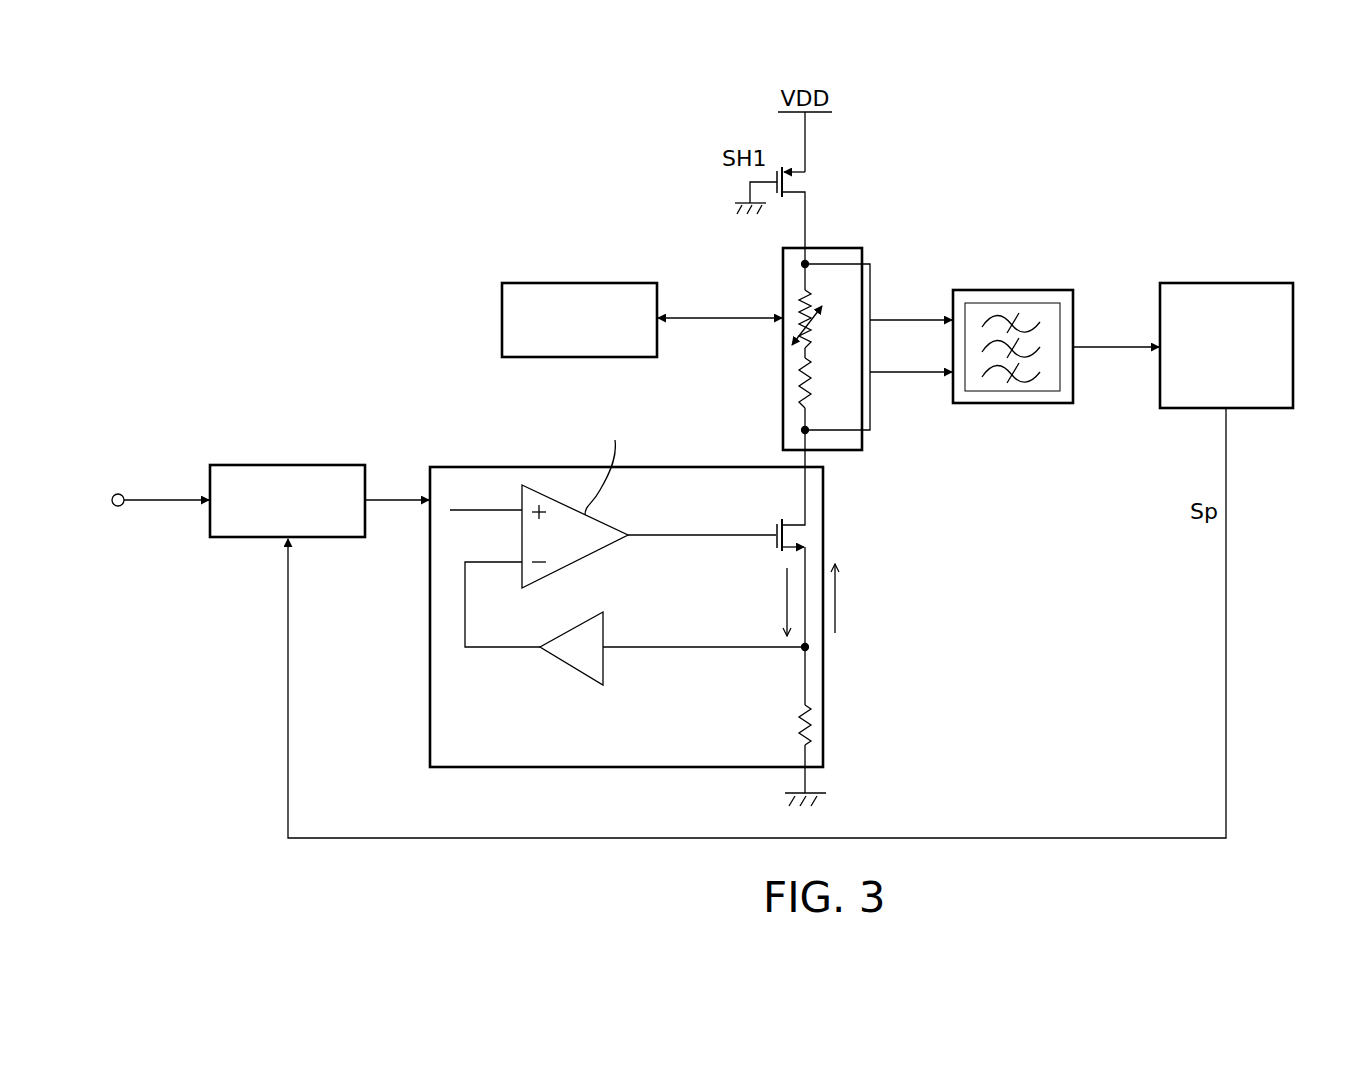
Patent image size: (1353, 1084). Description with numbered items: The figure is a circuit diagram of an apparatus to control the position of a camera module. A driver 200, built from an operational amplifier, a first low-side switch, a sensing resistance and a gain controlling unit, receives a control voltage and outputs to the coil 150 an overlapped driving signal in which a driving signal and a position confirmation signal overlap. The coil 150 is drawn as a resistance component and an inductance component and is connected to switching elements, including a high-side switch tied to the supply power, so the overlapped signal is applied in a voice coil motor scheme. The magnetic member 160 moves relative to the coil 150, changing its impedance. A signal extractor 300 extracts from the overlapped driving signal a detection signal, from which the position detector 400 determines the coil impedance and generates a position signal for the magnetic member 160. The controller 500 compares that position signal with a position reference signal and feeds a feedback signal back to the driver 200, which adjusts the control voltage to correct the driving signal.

The coil 150 is at (845, 248).
The magnetic member 160 is at (608, 283).
The driver 200 is at (472, 467).
The signal extractor 300 is at (1040, 290).
The position detector 400 is at (1258, 283).
The controller 500 is at (308, 465).